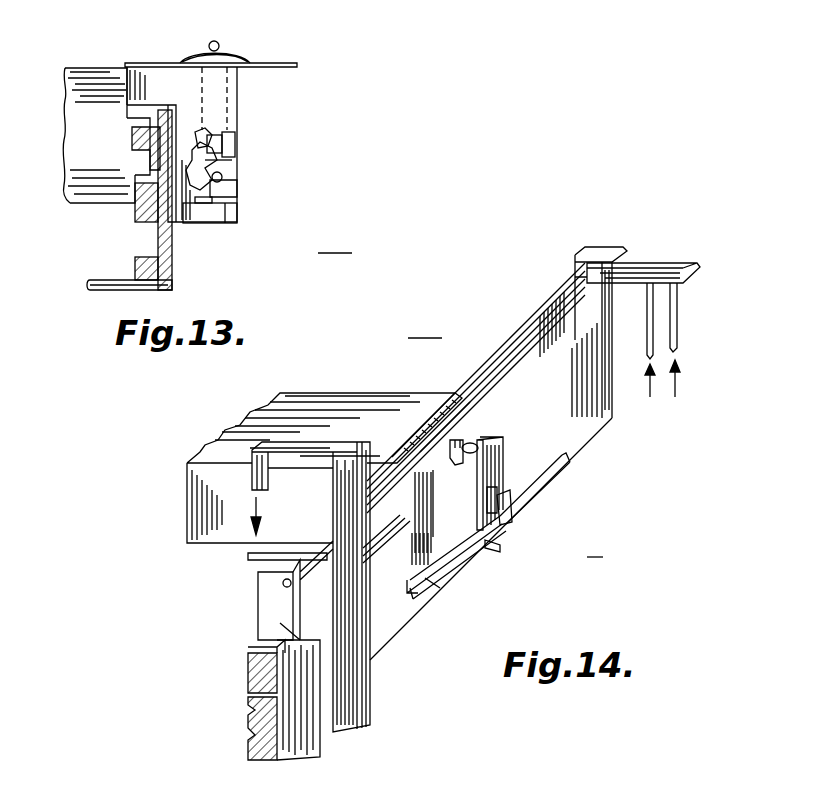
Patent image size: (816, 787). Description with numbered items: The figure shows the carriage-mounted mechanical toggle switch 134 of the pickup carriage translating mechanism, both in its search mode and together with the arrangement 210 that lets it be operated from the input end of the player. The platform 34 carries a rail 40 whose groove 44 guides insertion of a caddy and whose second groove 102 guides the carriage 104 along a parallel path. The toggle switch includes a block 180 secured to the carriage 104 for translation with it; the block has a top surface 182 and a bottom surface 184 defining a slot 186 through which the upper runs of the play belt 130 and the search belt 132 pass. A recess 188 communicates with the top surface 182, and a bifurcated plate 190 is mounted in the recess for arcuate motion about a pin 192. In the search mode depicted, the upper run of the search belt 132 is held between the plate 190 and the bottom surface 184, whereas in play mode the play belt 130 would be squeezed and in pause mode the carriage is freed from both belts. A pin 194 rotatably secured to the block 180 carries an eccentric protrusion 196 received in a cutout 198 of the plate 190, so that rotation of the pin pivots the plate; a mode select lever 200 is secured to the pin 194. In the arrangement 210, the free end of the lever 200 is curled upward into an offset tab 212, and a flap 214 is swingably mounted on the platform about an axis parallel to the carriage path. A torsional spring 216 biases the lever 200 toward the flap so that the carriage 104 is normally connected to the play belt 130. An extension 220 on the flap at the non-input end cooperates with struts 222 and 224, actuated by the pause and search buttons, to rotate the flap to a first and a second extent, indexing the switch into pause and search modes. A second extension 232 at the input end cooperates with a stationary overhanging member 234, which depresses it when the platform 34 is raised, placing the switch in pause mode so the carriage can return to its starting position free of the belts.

In FIG. 13, the platform 34 is at (90, 283).
In FIG. 13, the rail 40 is at (137, 212).
In FIG. 14, the rail 40 is at (313, 717).
In FIG. 13, the groove 44 is at (150, 258).
In FIG. 14, the groove 44 is at (250, 727).
In FIG. 13, the groove 102 is at (130, 150).
In FIG. 14, the groove 102 is at (250, 675).
In FIG. 13, the carriage 104 is at (88, 72).
In FIG. 14, the carriage 104 is at (352, 396).
In FIG. 13, the play belt 130 is at (197, 206).
In FIG. 14, the play belt 130 is at (410, 583).
In FIG. 13, the search belt 132 is at (230, 218).
In FIG. 14, the search belt 132 is at (440, 588).
In FIG. 13, the toggle switch 134 is at (186, 172).
In FIG. 14, the toggle switch 134 is at (603, 545).
In FIG. 13, the block 180 is at (145, 68).
In FIG. 14, the block 180 is at (490, 440).
In FIG. 13, the top surface 182 is at (224, 178).
In FIG. 13, the bottom surface 184 is at (205, 205).
In FIG. 14, the bottom surface 184 is at (493, 550).
In FIG. 13, the slot 186 is at (238, 197).
In FIG. 13, the recess 188 is at (232, 138).
In FIG. 14, the recess 188 is at (497, 487).
In FIG. 13, the bifurcated plate 190 is at (203, 137).
In FIG. 14, the bifurcated plate 190 is at (510, 522).
In FIG. 13, the pin 192 is at (234, 161).
In FIG. 13, the pin 194 is at (222, 80).
In FIG. 13, the eccentric protrusion 196 is at (236, 140).
In FIG. 13, the cutout 198 is at (200, 137).
In FIG. 14, the mode select lever 200 is at (468, 467).
In FIG. 14, the arrangement 210 is at (495, 453).
In FIG. 14, the offset tab 212 is at (447, 443).
In FIG. 14, the flap 214 is at (537, 343).
In FIG. 14, the torsional spring 216 is at (500, 457).
In FIG. 14, the extension 220 is at (670, 265).
In FIG. 14, the strut 222 is at (650, 316).
In FIG. 14, the strut 224 is at (677, 331).
In FIG. 14, the second extension 232 is at (250, 556).
In FIG. 14, the stationary overhanging member 234 is at (318, 442).